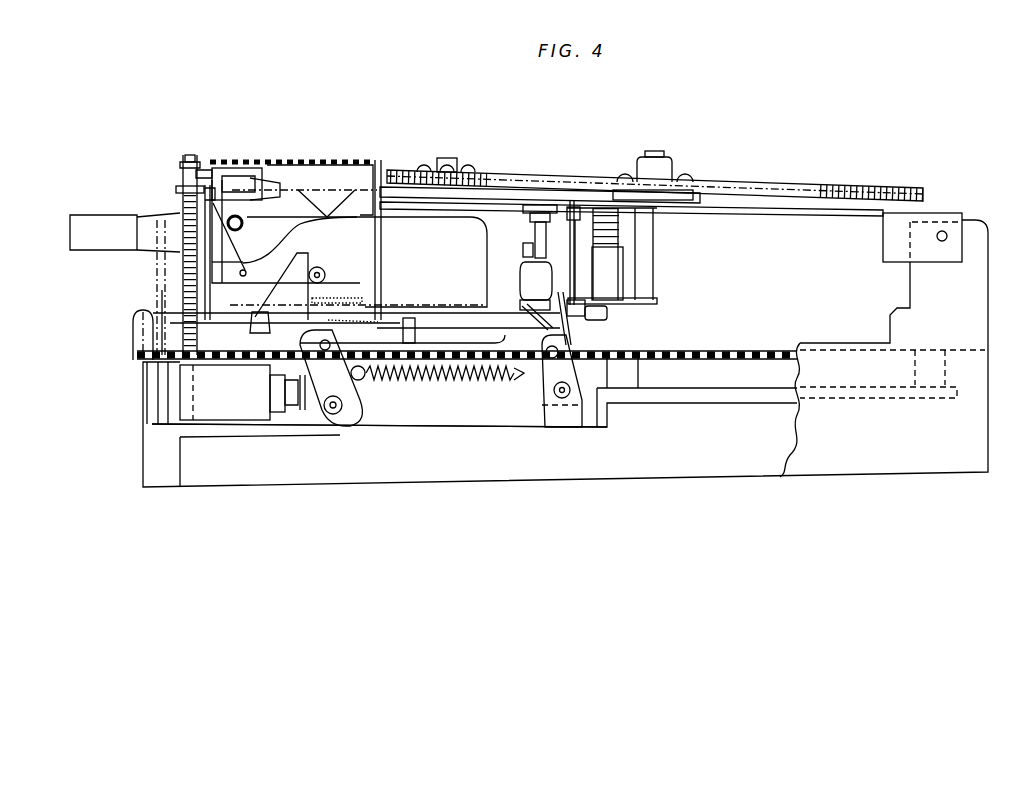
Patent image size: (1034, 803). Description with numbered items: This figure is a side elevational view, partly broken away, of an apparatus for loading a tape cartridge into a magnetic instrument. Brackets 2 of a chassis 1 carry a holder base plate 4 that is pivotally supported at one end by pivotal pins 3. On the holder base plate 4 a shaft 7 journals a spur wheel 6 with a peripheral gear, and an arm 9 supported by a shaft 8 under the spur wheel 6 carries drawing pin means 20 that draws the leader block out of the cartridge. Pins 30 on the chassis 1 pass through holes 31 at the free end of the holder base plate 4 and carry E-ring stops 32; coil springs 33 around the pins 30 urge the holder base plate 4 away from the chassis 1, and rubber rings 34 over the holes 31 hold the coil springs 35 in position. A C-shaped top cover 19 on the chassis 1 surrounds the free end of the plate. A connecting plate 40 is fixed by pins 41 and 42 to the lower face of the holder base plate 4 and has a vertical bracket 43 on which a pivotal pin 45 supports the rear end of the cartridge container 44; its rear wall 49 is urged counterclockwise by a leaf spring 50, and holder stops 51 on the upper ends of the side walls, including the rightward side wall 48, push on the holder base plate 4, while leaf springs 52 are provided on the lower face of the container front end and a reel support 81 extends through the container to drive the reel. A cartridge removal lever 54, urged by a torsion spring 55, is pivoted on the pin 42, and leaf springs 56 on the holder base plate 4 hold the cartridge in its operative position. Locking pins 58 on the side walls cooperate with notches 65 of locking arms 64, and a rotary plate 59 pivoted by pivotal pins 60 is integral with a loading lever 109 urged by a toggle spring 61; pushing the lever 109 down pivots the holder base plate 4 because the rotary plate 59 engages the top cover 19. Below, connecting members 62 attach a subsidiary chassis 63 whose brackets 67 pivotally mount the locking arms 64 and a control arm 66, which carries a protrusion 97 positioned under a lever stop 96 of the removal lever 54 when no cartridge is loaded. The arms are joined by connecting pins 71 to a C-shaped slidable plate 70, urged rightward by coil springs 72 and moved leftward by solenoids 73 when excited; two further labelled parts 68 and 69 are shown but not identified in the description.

The chassis 1 is at (752, 346).
The brackets 2 is at (982, 290).
The pivotal pins 3 is at (950, 236).
The holder base plate 4 is at (806, 218).
The spur wheel 6 is at (805, 190).
The shaft 7 is at (657, 157).
The shaft 8 is at (447, 158).
The arm 9 is at (493, 188).
The top cover 19 is at (292, 160).
The drawing pin means 20 is at (522, 274).
The pins 30 is at (190, 160).
The holes 31 is at (185, 196).
The stops 32 is at (200, 173).
The coil springs 33 is at (180, 277).
The rubber rings 34 is at (178, 188).
The coil springs 35 is at (180, 165).
The connecting plate 40 is at (657, 302).
The pin 41 is at (650, 240).
The pin 42 is at (625, 227).
The vertical bracket 43 is at (586, 309).
The cartridge container 44 is at (472, 325).
The pivotal pin 45 is at (570, 320).
The rightward side wall 48 is at (425, 268).
The rear wall 49 is at (568, 230).
The leaf spring 50 is at (582, 212).
The holder stops 51 is at (235, 183).
The leaf springs 52 is at (252, 322).
The cartridge removal lever 54 is at (524, 250).
The torsion spring 55 is at (618, 247).
The leaf springs 56 is at (322, 202).
The locking pins 58 is at (326, 275).
The rotary plate 59 is at (158, 250).
The pivotal pins 60 is at (243, 224).
The toggle spring 61 is at (237, 240).
The connecting members 62 is at (170, 378).
The subsidiary chassis 63 is at (452, 428).
The locking arms 64 is at (300, 266).
The notches 65 is at (350, 308).
The control arm 66 is at (545, 312).
The brackets 67 is at (412, 398).
The pivot 68 is at (345, 404).
The pivot 69 is at (570, 392).
The slidable plate 70 is at (520, 378).
The connecting pins 71 is at (333, 345).
The coil springs 72 is at (435, 380).
The solenoids 73 is at (208, 398).
The reel support 81 is at (415, 327).
The lever stop 96 is at (622, 282).
The protrusion 97 is at (605, 318).
The loading lever 109 is at (98, 220).